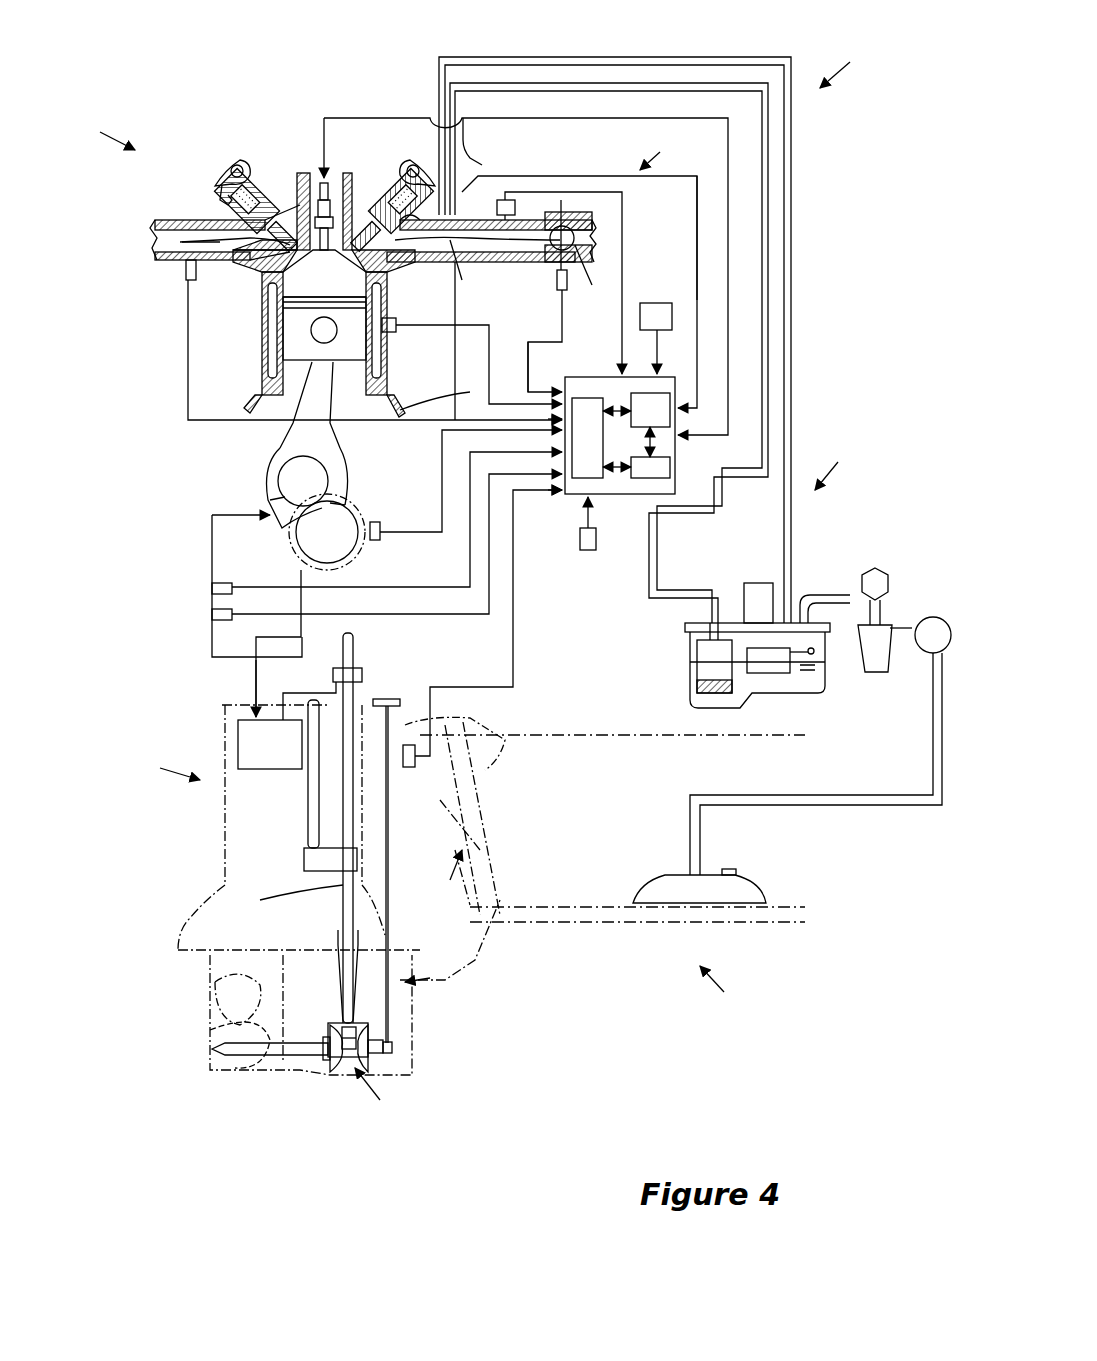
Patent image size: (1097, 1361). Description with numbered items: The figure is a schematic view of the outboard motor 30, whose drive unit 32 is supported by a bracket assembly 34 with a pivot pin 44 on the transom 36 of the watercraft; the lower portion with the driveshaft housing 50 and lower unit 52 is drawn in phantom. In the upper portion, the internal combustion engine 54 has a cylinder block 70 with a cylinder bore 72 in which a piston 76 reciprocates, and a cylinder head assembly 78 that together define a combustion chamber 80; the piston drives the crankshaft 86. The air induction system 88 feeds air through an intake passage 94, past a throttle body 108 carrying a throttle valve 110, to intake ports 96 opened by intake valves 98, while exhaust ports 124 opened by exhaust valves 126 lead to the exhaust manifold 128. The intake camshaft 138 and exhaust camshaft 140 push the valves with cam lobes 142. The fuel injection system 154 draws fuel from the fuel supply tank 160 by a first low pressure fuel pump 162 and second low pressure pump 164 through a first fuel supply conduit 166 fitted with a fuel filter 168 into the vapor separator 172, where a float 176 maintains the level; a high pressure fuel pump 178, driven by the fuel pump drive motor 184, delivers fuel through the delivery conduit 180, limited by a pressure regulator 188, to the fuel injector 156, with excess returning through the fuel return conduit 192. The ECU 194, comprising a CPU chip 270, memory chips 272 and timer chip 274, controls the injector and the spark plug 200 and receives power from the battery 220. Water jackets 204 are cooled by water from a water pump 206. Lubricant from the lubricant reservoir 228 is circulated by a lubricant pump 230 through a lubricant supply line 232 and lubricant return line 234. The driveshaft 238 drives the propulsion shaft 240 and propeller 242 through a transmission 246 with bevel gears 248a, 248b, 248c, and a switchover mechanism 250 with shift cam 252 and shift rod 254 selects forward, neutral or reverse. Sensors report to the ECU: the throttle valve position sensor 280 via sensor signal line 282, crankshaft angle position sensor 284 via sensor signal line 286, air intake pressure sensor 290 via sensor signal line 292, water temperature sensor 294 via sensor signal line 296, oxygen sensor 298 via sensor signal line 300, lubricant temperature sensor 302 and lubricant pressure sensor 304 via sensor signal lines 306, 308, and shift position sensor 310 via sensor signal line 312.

The outboard motor 30 is at (785, 536).
The drive unit 32 is at (258, 827).
The bracket assembly 34 is at (446, 882).
The transom 36 is at (500, 857).
The pivot pin 44 is at (480, 722).
The driveshaft housing 50 is at (225, 855).
The lower unit 52 is at (412, 1022).
The internal combustion engine 54 is at (242, 197).
The cylinder block 70 is at (262, 352).
The cylinder bore 72 is at (262, 284).
The piston 76 is at (262, 322).
The cylinder head assembly 78 is at (294, 165).
The combustion chamber 80 is at (387, 300).
The crankshaft 86 is at (345, 530).
The air induction system 88 is at (579, 270).
The air intake passage 94 is at (468, 279).
The intake port 96 is at (395, 262).
The intake valve 98 is at (350, 195).
The throttle body 108 is at (568, 210).
The throttle valve 110 is at (592, 274).
The exhaust port 124 is at (215, 200).
The exhaust valve 126 is at (190, 228).
The exhaust manifold 128 is at (150, 238).
The intake camshaft 138 is at (405, 150).
The exhaust camshaft 140 is at (238, 155).
The cam lobe 142 is at (215, 160).
The fuel injection system 154 is at (837, 462).
The fuel injector 156 is at (484, 180).
The fuel supply tank 160 is at (745, 888).
The first low pressure fuel pump 162 is at (933, 617).
The second low pressure pump 164 is at (882, 573).
The first fuel supply conduit 166 is at (925, 762).
The fuel filter 168 is at (878, 670).
The vapor separator 172 is at (800, 700).
The float 176 is at (764, 700).
The high pressure fuel pump 178 is at (710, 670).
The delivery conduit 180 is at (770, 255).
The fuel pump drive motor 184 is at (705, 686).
The pressure regulator 188 is at (755, 583).
The fuel return conduit 192 is at (792, 372).
The ECU 194 is at (585, 385).
The spark plug 200 is at (332, 112).
The water jacket 204 is at (248, 392).
The water pump 206 is at (304, 858).
The battery 220 is at (656, 300).
The lubricant reservoir 228 is at (238, 742).
The lubricant pump 230 is at (362, 675).
The lubricant supply line 232 is at (212, 537).
The lubricant return line 234 is at (256, 692).
The driveshaft 238 is at (276, 906).
The propulsion shaft 240 is at (305, 1060).
The propeller 242 is at (240, 1085).
The transmission 246 is at (364, 1085).
The bevel gear 248a is at (345, 1030).
The bevel gear 248b is at (330, 1070).
The bevel gear 248c is at (370, 1065).
The switchover mechanism 250 is at (432, 976).
The shift cam 252 is at (395, 1048).
The shift rod 254 is at (392, 780).
The CPU chip 270 is at (585, 480).
The memory chips 272 is at (672, 417).
The timer chip 274 is at (680, 470).
The throttle valve position sensor 280 is at (555, 280).
The sensor signal line 282 is at (528, 355).
The crankshaft angle position sensor 284 is at (380, 522).
The sensor signal line 286 is at (442, 535).
The air intake pressure sensor 290 is at (520, 198).
The sensor signal line 292 is at (622, 240).
The water temperature sensor 294 is at (398, 332).
The sensor signal line 296 is at (435, 396).
The oxygen sensor 298 is at (184, 272).
The sensor signal line 300 is at (188, 370).
The lubricant temperature sensor 302 is at (212, 588).
The lubricant pressure sensor 304 is at (212, 616).
The sensor signal line 306 is at (278, 585).
The sensor signal line 308 is at (340, 617).
The shift position sensor 310 is at (415, 760).
The sensor signal line 312 is at (513, 640).